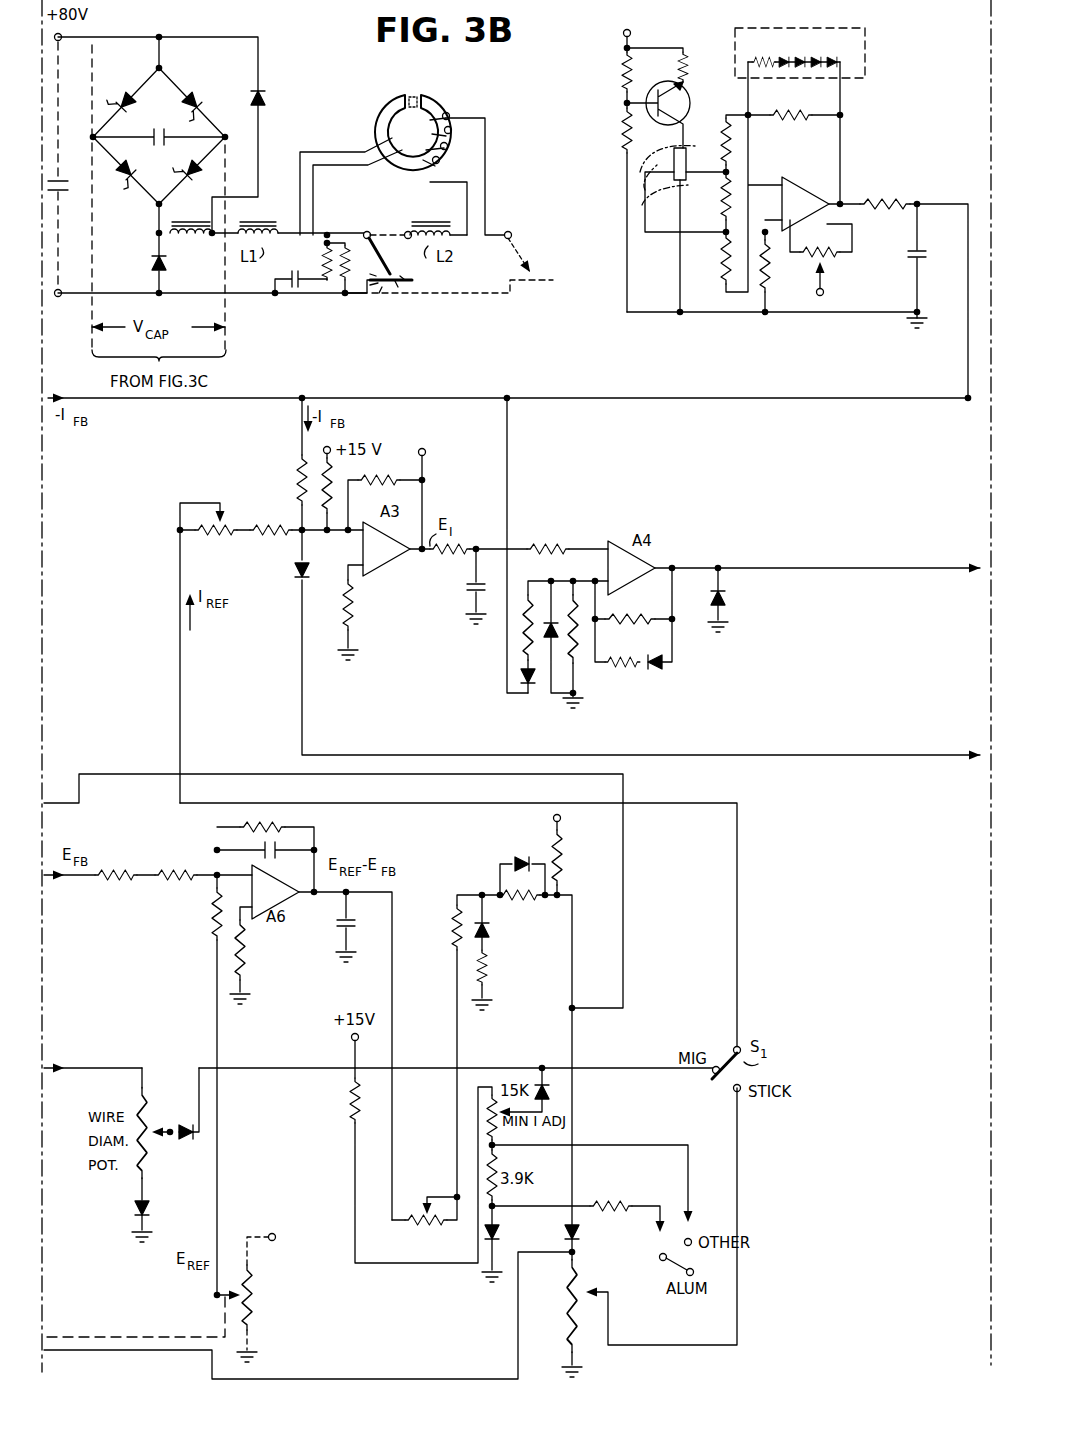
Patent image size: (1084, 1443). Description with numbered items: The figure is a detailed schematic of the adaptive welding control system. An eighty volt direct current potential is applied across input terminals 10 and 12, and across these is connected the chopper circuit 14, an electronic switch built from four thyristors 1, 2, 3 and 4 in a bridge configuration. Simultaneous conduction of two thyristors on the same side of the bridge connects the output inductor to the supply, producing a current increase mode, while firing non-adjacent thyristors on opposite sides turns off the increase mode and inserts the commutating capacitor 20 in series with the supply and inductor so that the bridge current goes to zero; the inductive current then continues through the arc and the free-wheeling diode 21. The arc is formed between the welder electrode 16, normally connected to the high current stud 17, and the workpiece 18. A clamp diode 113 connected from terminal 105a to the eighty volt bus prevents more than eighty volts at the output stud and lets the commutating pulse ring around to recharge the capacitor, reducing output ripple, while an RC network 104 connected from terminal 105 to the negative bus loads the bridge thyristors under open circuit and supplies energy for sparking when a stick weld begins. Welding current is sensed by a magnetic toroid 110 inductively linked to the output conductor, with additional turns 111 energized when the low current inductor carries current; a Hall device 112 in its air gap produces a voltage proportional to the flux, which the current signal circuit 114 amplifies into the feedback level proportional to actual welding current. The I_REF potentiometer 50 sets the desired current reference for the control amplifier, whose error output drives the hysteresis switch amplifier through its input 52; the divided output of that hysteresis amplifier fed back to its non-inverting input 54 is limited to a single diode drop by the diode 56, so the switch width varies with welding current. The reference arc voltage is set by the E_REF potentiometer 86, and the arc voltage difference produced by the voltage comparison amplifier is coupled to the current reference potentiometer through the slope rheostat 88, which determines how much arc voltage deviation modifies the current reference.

The thyristor 1 is at (119, 96).
The thyristor 2 is at (198, 177).
The thyristor 3 is at (198, 94).
The thyristor 4 is at (122, 181).
The input terminal 10 is at (62, 40).
The input terminal 12 is at (62, 289).
The chopper circuit 14 is at (161, 126).
The welder electrode 16 is at (376, 246).
The high current stud 17 is at (368, 230).
The workpiece 18 is at (392, 298).
The commutating capacitor 20 is at (170, 130).
The free-wheeling diode 21 is at (152, 266).
The I_REF potentiometer 50 is at (584, 1308).
The A4 input 52 is at (592, 548).
The non-inverting input 54 is at (592, 582).
The diode 56 is at (556, 640).
The E_REF potentiometer 86 is at (252, 1280).
The slope rheostat 88 is at (410, 1208).
The RC network 104 is at (350, 270).
The terminal 105 is at (327, 232).
The terminal 105a is at (208, 244).
The current sensing magnetic toroid 110 is at (415, 166).
The additional turns 111 is at (452, 142).
The Hall device 112 is at (408, 94).
The clamp diode 113 is at (276, 98).
The current signal circuit 114 is at (778, 344).